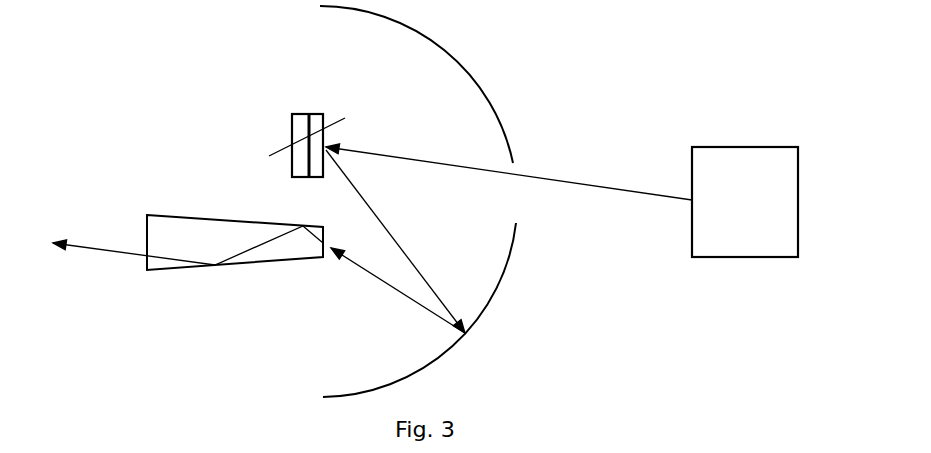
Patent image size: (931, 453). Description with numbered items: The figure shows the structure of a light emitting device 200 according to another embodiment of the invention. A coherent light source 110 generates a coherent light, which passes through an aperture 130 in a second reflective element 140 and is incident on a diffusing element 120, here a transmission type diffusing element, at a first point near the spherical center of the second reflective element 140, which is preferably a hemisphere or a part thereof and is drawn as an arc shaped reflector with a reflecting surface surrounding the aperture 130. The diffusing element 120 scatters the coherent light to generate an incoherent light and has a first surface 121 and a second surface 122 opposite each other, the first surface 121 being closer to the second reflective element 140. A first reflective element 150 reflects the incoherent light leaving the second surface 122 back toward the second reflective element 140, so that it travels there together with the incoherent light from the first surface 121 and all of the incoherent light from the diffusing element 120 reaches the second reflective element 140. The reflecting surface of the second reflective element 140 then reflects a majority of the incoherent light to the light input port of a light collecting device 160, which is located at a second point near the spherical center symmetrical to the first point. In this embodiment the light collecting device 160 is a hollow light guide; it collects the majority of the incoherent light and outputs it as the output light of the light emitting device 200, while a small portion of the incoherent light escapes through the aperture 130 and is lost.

The light emitting device 200 is at (88, 30).
The coherent light source 110 is at (747, 257).
The diffusing element 120 is at (316, 112).
The first surface 121 is at (353, 118).
The second surface 122 is at (278, 150).
The aperture 130 is at (517, 200).
The second reflective element 140 is at (483, 322).
The first reflective element 150 is at (300, 112).
The light collecting device 160 is at (233, 272).